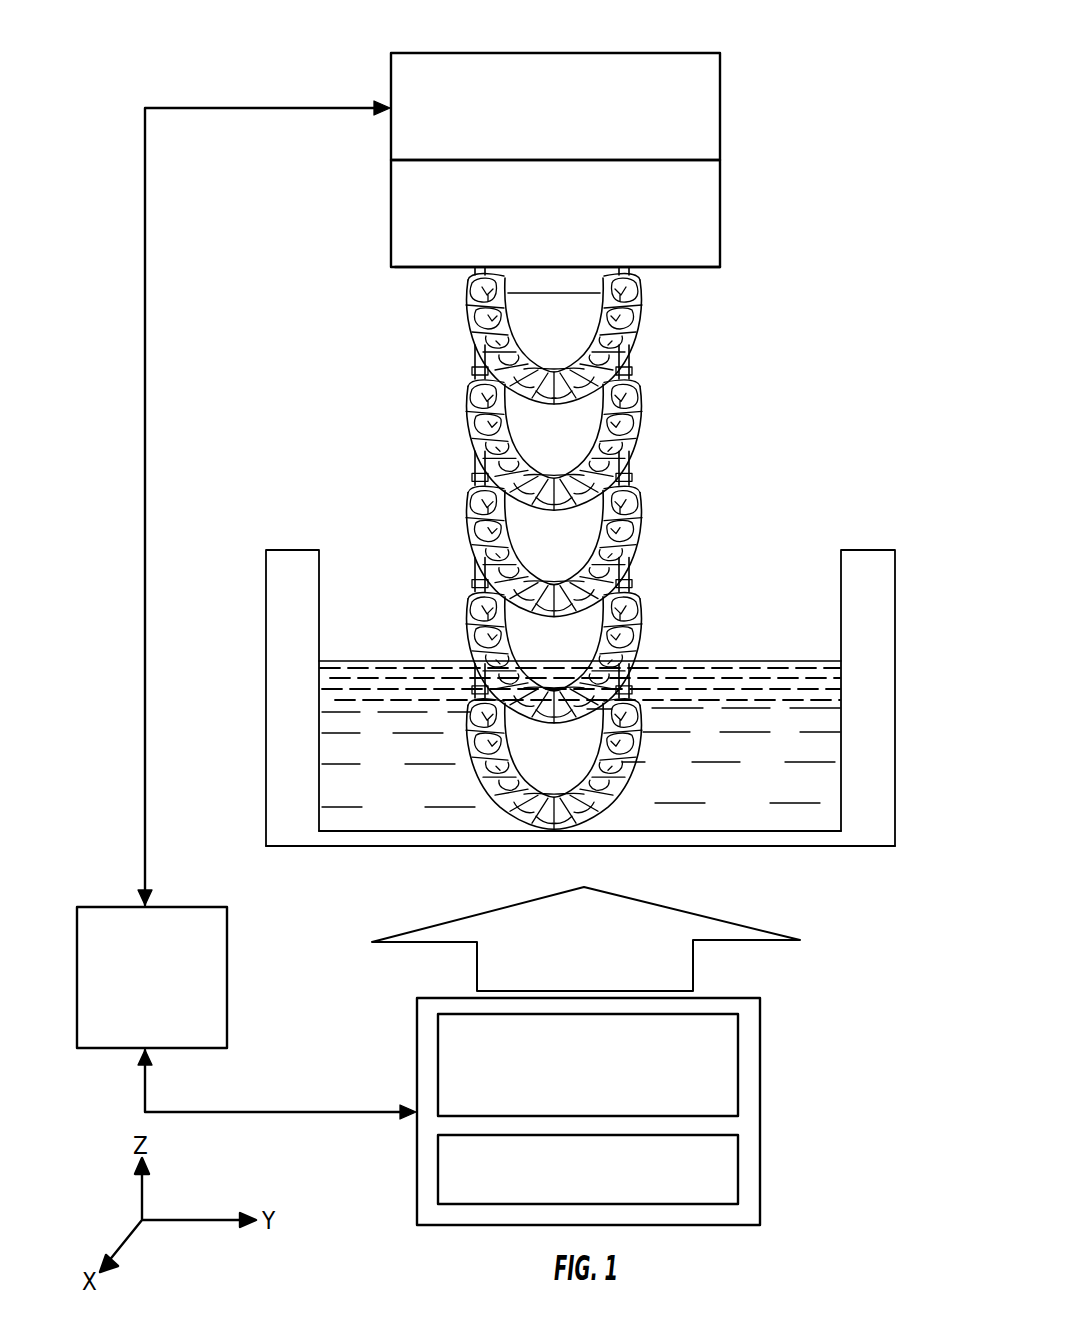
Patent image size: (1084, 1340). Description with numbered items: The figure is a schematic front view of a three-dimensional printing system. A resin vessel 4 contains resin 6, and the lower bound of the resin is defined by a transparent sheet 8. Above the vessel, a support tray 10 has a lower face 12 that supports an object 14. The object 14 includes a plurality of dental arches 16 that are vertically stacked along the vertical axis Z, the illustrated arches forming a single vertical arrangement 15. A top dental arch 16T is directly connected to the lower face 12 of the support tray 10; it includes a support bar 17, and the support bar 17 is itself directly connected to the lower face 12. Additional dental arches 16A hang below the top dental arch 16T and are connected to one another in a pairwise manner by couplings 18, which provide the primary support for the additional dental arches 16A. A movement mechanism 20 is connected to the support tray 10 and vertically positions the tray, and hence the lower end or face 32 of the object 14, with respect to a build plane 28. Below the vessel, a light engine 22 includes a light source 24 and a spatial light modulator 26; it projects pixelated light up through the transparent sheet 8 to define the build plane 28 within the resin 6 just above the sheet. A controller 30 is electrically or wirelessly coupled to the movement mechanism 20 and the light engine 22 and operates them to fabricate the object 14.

The resin vessel 4 is at (880, 603).
The resin 6 is at (340, 722).
The transparent sheet 8 is at (808, 848).
The support tray 10 is at (722, 204).
The lower face 12 is at (418, 270).
The object 14 is at (594, 575).
The single vertical arrangement 15 is at (590, 575).
The dental arches 16 is at (480, 452).
The top dental arch 16T is at (628, 318).
The additional dental arches 16A is at (622, 525).
The support bar 17 is at (560, 281).
The couplings 18 is at (480, 348).
The movement mechanism 20 is at (722, 101).
The light engine 22 is at (760, 1111).
The light source 24 is at (740, 1185).
The spatial light modulator 26 is at (740, 1058).
The build plane 28 is at (365, 823).
The controller 30 is at (228, 953).
The lower end or face 32 is at (540, 830).